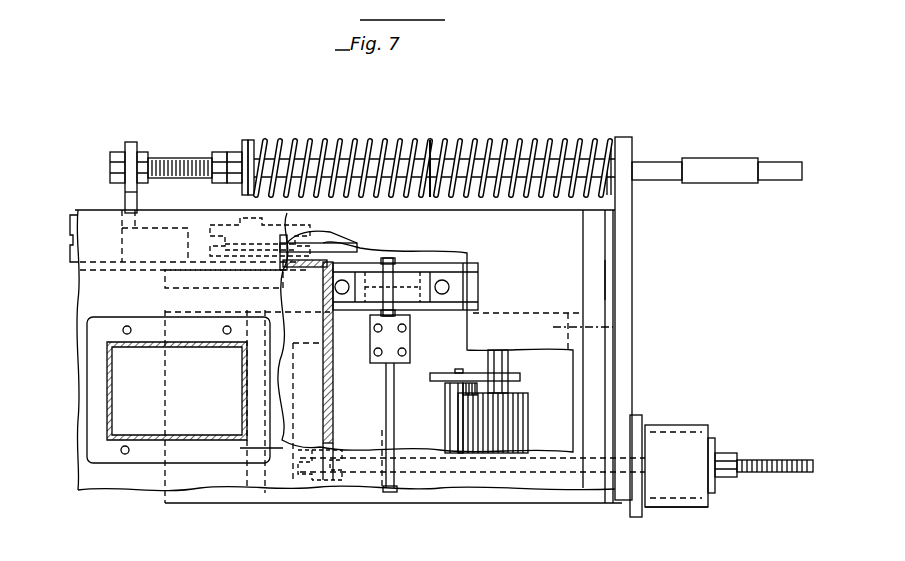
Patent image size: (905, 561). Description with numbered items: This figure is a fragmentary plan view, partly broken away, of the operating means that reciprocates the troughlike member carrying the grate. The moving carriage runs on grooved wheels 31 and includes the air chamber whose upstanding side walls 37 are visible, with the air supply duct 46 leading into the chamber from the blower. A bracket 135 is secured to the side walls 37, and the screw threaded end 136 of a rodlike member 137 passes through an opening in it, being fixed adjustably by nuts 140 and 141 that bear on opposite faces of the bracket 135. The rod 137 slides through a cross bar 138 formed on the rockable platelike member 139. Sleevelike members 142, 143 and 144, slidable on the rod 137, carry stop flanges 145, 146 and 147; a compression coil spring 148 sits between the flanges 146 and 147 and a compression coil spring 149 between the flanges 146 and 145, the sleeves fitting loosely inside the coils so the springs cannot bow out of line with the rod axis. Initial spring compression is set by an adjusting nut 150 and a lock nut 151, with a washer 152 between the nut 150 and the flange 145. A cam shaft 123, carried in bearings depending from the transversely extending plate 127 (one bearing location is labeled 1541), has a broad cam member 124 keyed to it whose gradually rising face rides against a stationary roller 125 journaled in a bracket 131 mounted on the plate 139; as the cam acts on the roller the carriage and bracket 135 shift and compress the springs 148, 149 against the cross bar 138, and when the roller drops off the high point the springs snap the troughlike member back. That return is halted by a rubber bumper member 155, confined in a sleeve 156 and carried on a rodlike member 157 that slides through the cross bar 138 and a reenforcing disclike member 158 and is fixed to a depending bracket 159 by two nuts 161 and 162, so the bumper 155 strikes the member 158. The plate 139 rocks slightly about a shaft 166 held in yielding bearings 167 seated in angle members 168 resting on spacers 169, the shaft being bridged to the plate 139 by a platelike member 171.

The nut 140 is at (115, 152).
The nut 141 is at (130, 142).
The bracket 135 is at (125, 192).
The screw threaded end 136 is at (170, 158).
The lock nut 151 is at (216, 152).
The adjusting nut 150 is at (233, 152).
The washer 152 is at (245, 140).
The stop flange 145 is at (253, 150).
The sleevelike member 142 is at (290, 150).
The compression coil spring 149 is at (345, 147).
The stop flange 146 is at (430, 140).
The sleevelike member 143 is at (478, 150).
The compression coil spring 148 is at (545, 143).
The sleevelike member 144 is at (585, 143).
The rodlike member 137 is at (652, 162).
The stop flange 147 is at (613, 185).
The cross bar 138 is at (623, 220).
The transversely extending plate 127 is at (605, 280).
The platelike member 139 is at (610, 348).
The grooved wheels 31 is at (232, 218).
The side walls 37 is at (298, 262).
The depending bracket 159 is at (333, 395).
The bearings 167 is at (400, 265).
The angle members 168 is at (455, 272).
The spacers 169 is at (470, 283).
The plate 1541 is at (555, 310).
The platelike member 171 is at (372, 340).
The shaft 166 is at (385, 375).
The bracket 131 is at (434, 372).
The cam shaft 123 is at (508, 380).
The cam member 124 is at (528, 430).
The roller 125 is at (452, 400).
The nut 162 is at (333, 455).
The air supply duct 46 is at (107, 425).
The nut 161 is at (244, 451).
The rodlike member 157 is at (545, 472).
The reenforcing disclike member 158 is at (640, 505).
The rubber bumper member 155 is at (710, 437).
The sleeve 156 is at (695, 505).